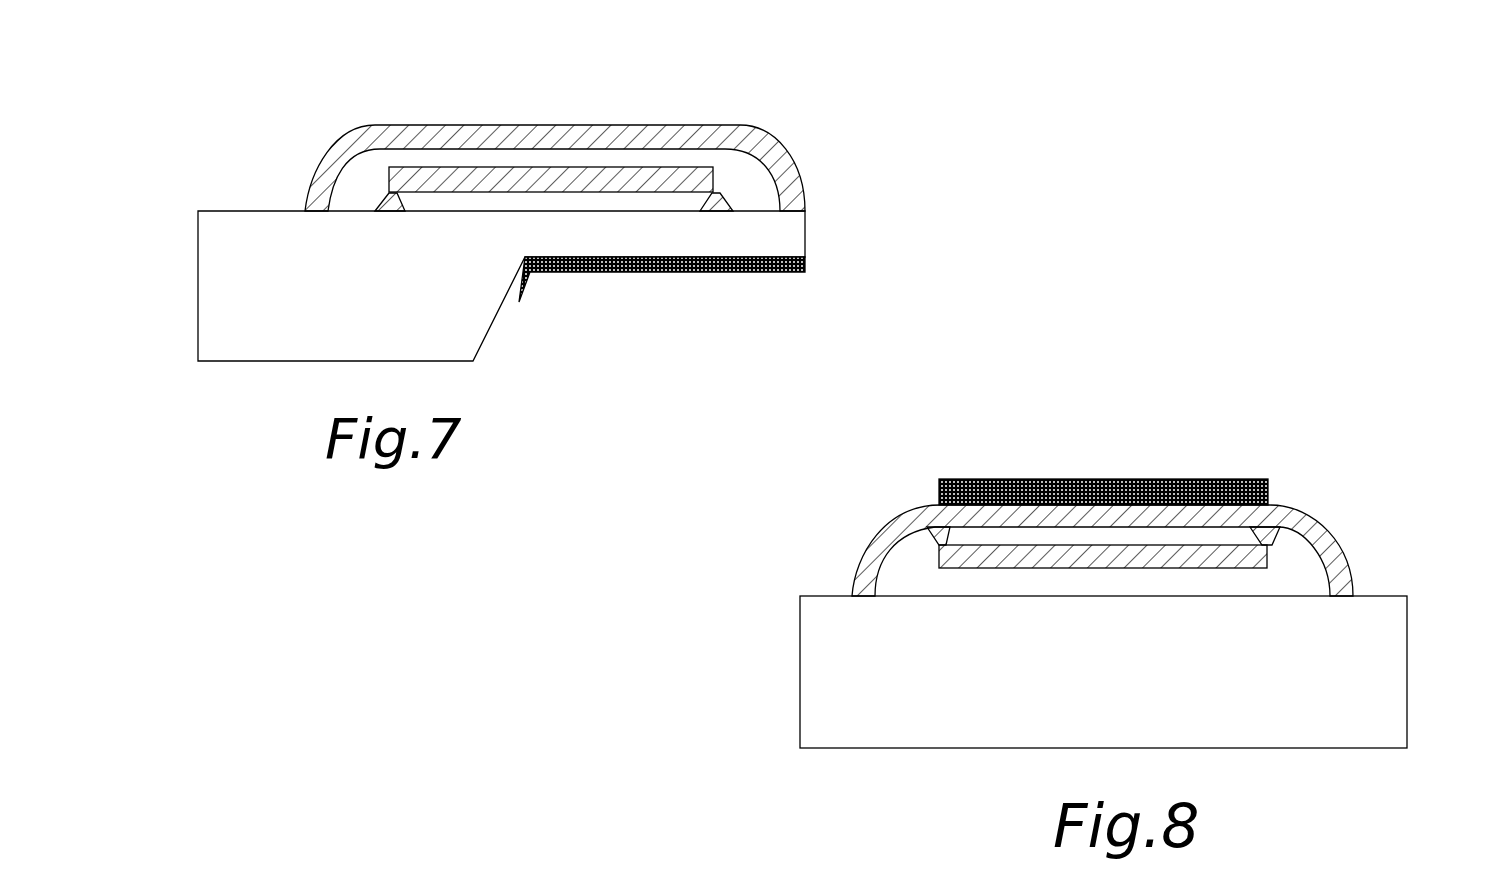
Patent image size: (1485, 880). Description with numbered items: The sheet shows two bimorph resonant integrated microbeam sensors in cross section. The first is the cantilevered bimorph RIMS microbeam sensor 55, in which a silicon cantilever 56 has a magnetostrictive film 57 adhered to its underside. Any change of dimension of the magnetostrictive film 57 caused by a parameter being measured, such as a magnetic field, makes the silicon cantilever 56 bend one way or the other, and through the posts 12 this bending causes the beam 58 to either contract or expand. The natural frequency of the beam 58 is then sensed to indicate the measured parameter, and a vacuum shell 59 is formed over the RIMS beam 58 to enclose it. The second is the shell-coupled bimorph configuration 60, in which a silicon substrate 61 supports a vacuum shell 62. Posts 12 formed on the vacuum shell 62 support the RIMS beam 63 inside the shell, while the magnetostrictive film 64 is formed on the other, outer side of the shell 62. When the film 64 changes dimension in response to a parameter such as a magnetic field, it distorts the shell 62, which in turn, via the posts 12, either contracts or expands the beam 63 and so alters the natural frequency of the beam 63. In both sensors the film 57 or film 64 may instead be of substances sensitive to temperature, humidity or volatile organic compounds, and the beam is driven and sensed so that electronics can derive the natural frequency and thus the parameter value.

In FIG. 7, the posts 12 is at (717, 200).
In FIG. 8, the posts 12 is at (866, 546).
In FIG. 8, the cantilevered bimorph RIMS microbeam sensor 55 is at (917, 212).
In FIG. 7, the silicon cantilever 56 is at (230, 220).
In FIG. 7, the magnetostrictive film 57 is at (683, 274).
In FIG. 7, the beam 58 is at (586, 167).
In FIG. 7, the vacuum shell 59 is at (443, 125).
In FIG. 8, the shell-coupled bimorph configuration 60 is at (1305, 380).
In FIG. 8, the silicon substrate 61 is at (1397, 678).
In FIG. 8, the vacuum shell 62 is at (908, 514).
In FIG. 8, the beam 63 is at (1110, 570).
In FIG. 8, the magnetostrictive film 64 is at (1120, 492).